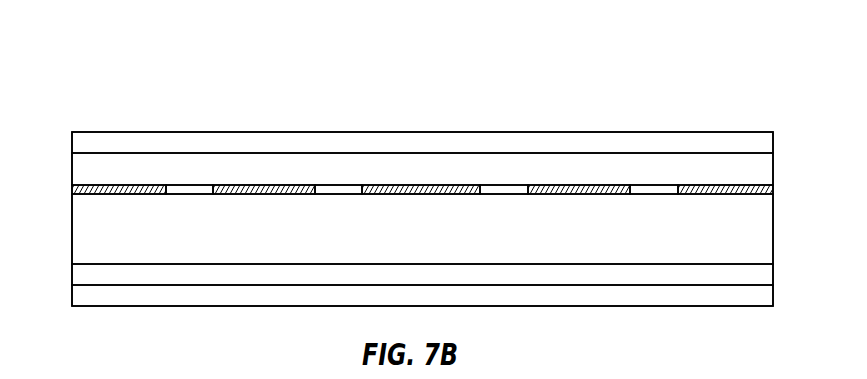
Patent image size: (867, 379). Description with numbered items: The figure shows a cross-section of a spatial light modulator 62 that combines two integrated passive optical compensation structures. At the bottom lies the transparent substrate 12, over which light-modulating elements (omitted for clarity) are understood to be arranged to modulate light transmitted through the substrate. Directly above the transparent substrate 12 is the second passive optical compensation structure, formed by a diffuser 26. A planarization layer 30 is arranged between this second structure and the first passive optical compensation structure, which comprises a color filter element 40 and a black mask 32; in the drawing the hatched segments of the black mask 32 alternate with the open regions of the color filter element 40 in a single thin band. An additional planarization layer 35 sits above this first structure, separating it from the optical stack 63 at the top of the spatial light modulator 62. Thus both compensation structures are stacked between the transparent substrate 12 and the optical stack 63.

The spatial light modulator 62 is at (115, 45).
The optical stack 63 is at (773, 143).
The planarization layer 35 is at (72, 168).
The color filter element 40 is at (263, 183).
The black mask 32 is at (347, 190).
The planarization layer 30 is at (72, 228).
The diffuser 26 is at (72, 273).
The transparent substrate 12 is at (72, 290).